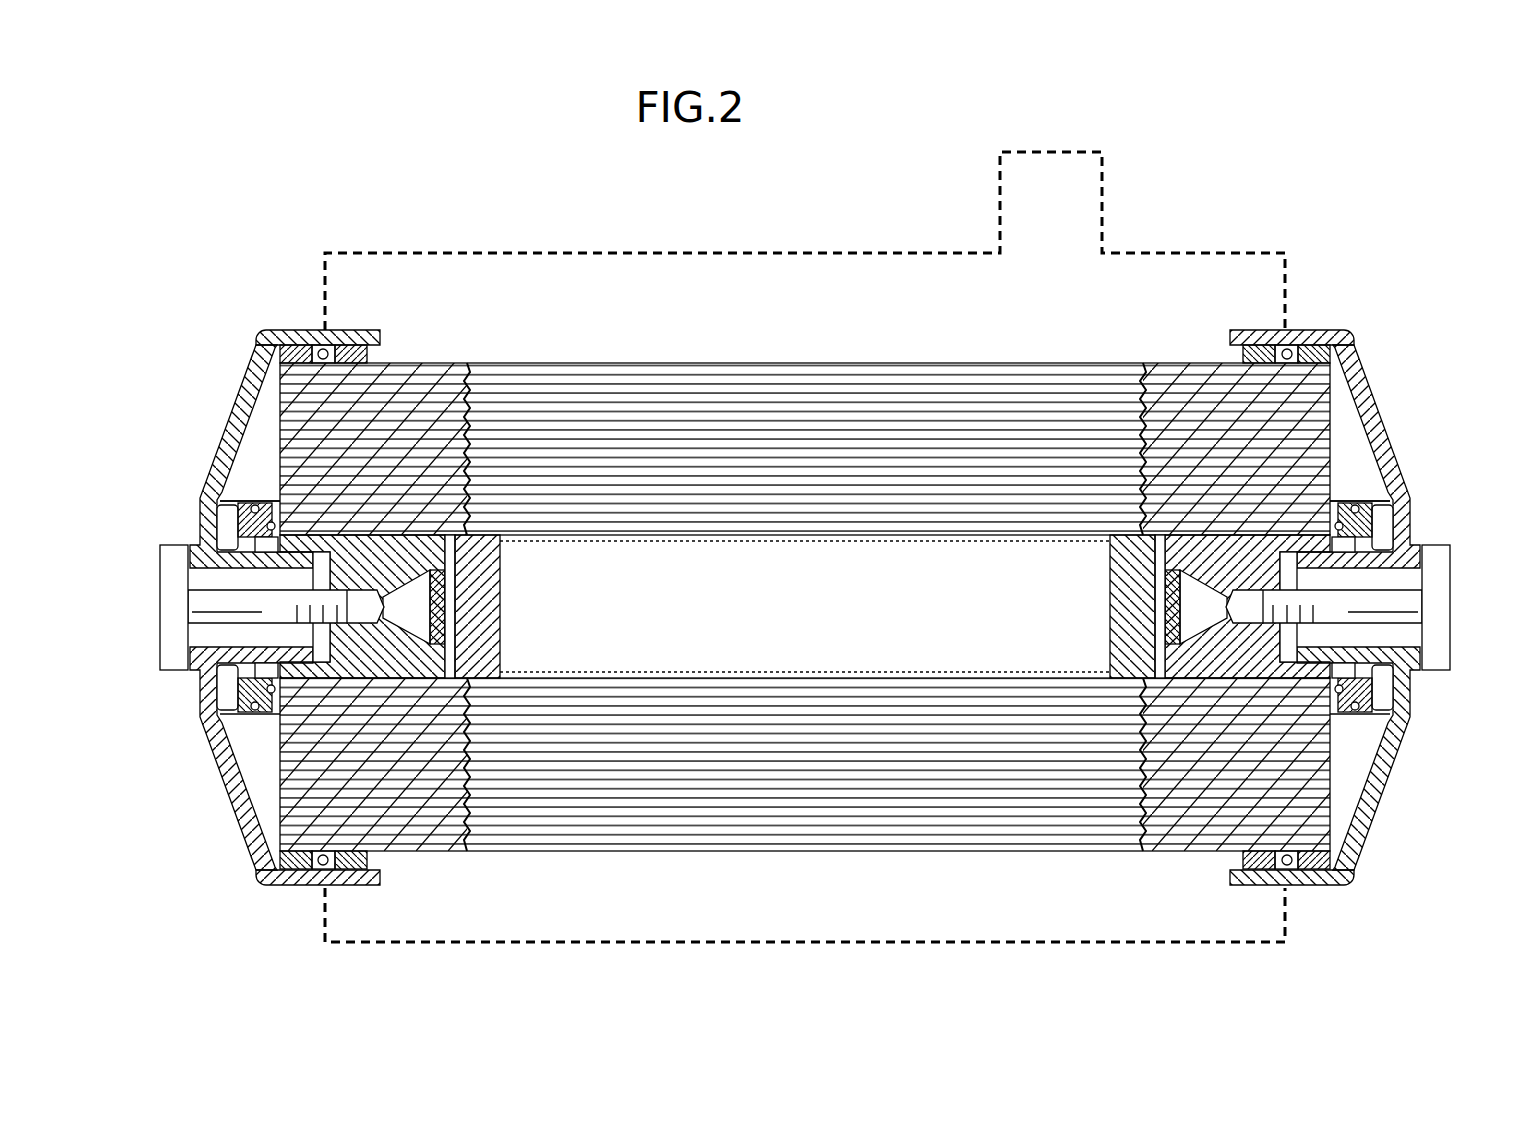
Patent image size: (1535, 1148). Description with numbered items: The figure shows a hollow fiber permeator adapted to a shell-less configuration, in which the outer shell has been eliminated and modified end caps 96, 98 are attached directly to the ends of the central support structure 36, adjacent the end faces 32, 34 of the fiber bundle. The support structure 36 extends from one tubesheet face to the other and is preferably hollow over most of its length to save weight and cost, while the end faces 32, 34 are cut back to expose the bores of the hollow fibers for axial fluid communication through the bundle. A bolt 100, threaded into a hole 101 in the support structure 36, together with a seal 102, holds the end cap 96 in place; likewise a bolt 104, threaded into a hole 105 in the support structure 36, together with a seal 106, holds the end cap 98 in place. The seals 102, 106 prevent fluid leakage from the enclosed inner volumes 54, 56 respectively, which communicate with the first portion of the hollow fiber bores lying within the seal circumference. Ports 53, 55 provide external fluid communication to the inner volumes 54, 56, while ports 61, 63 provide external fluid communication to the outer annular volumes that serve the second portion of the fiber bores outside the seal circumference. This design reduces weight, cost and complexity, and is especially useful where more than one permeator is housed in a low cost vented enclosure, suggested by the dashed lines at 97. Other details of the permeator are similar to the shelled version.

The end face 32 is at (1331, 803).
The end face 34 is at (277, 778).
The support structure 36 is at (820, 673).
The port 53 is at (1405, 506).
The enclosed inner volume 54 is at (1384, 683).
The port 55 is at (205, 506).
The enclosed inner volume 56 is at (226, 683).
The port 61 is at (1383, 759).
The port 63 is at (222, 758).
The end cap 96 is at (1352, 340).
The vented enclosure 97 is at (1287, 921).
The end cap 98 is at (258, 340).
The bolt 100 is at (1449, 628).
The hole 101 is at (1243, 595).
The seal 102 is at (1403, 527).
The bolt 104 is at (161, 628).
The hole 105 is at (367, 595).
The seal 106 is at (207, 527).